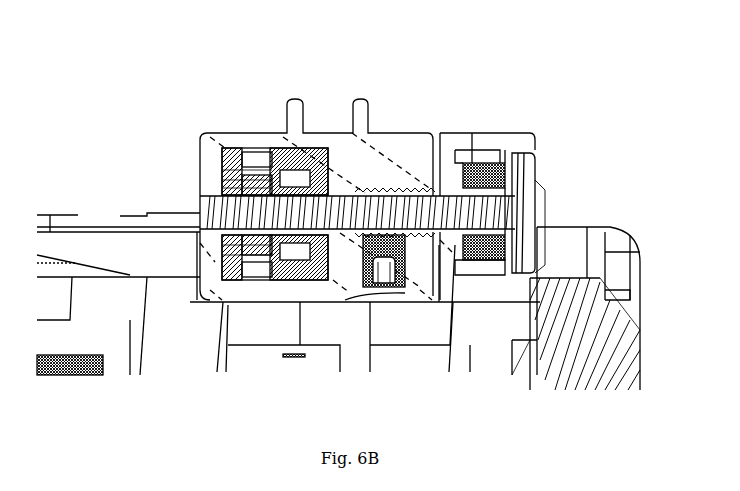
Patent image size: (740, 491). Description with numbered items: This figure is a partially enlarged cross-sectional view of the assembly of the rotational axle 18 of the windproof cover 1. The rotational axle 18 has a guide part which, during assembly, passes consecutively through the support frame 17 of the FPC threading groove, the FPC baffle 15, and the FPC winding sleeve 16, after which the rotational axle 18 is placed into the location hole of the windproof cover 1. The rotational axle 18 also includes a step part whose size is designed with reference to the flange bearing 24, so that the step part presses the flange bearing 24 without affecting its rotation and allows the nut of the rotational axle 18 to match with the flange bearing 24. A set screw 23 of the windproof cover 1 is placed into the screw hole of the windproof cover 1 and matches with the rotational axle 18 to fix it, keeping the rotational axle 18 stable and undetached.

The windproof cover 1 is at (370, 136).
The FPC baffle 15 is at (232, 175).
The FPC winding sleeve 16 is at (228, 195).
The support frame of the FPC threading groove 17 is at (277, 157).
The rotational axle 18 is at (518, 211).
The set screw 23 is at (397, 251).
The flange bearing 24 is at (492, 170).